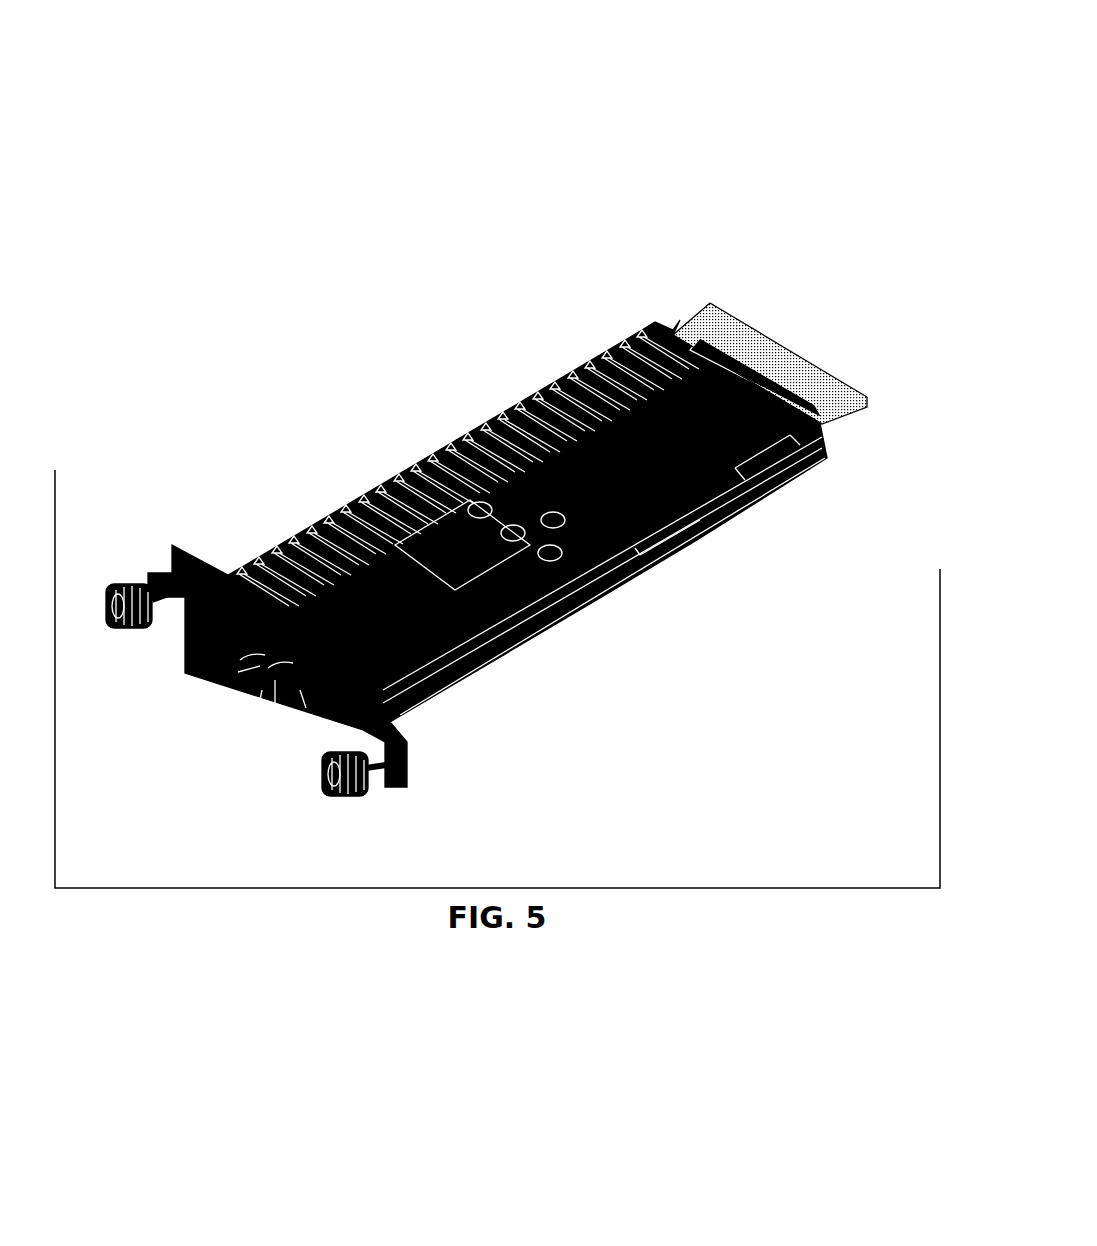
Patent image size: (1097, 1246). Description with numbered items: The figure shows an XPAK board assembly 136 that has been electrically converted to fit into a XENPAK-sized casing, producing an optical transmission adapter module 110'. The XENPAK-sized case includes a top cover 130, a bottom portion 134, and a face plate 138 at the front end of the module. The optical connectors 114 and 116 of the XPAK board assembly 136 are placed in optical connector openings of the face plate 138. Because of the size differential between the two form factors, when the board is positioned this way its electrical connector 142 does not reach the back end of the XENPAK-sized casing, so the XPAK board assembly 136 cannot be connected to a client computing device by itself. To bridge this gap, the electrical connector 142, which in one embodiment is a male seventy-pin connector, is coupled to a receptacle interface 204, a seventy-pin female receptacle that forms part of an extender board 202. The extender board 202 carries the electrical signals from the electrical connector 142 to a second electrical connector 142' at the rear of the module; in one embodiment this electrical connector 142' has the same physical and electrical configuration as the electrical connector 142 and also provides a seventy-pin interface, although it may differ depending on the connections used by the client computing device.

The optical transmission adapter module 110' is at (487, 463).
The top cover 130 is at (587, 380).
The extender board 202 is at (746, 472).
The face plate 138 is at (167, 553).
The optical connector 116 is at (247, 682).
The optical connector 114 is at (282, 703).
The bottom portion 134 is at (732, 530).
The XPAK board assembly 136 is at (502, 627).
The receptacle interface 204 is at (662, 548).
The electrical connector 142 is at (744, 707).
The electrical connector 142' is at (809, 633).